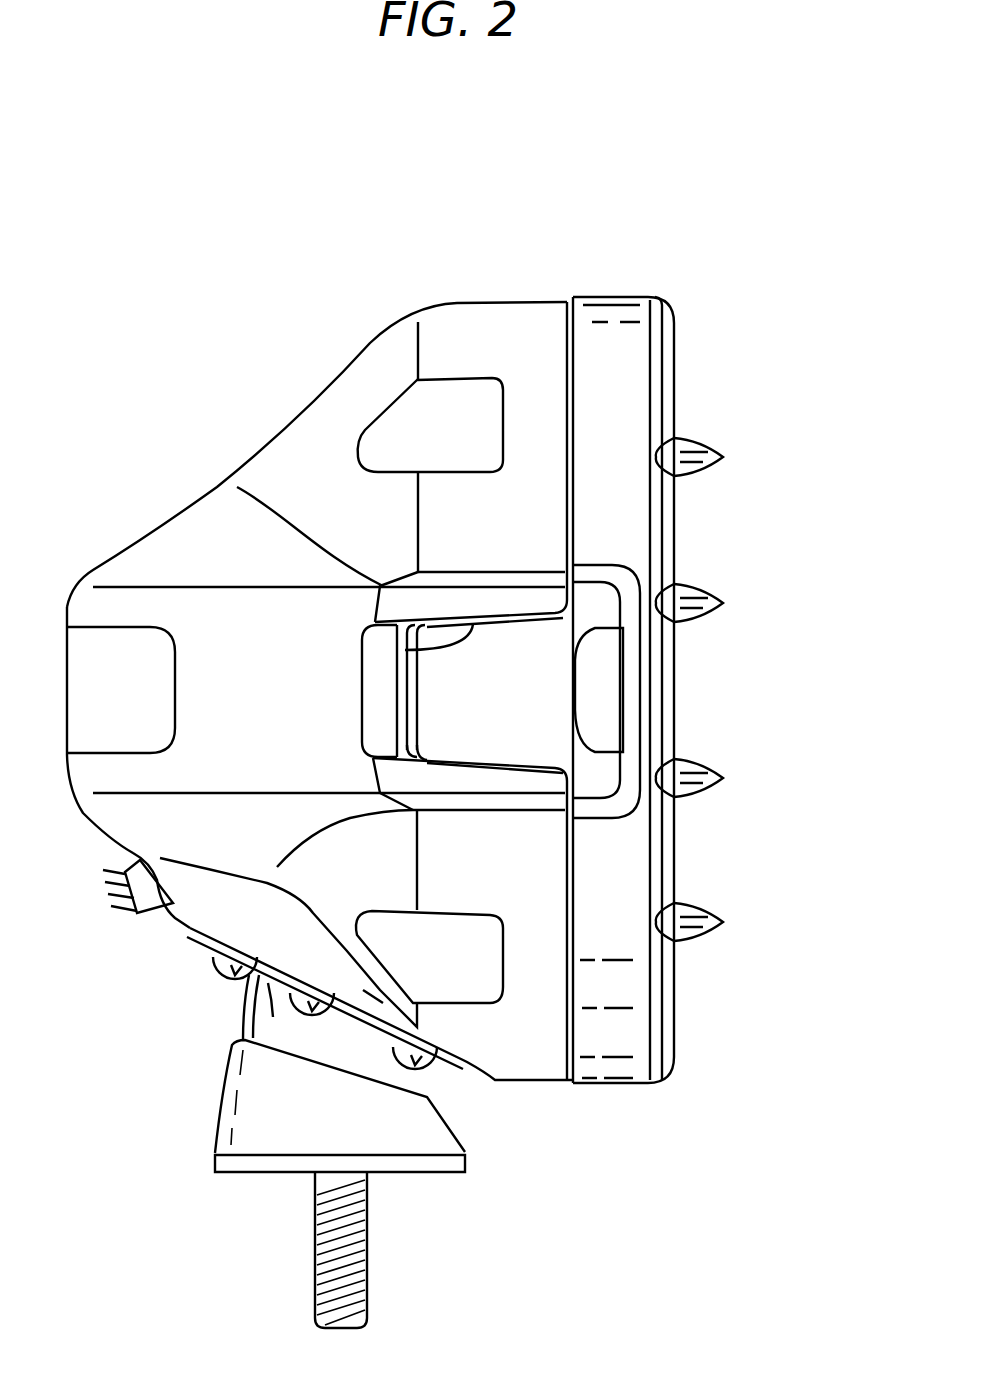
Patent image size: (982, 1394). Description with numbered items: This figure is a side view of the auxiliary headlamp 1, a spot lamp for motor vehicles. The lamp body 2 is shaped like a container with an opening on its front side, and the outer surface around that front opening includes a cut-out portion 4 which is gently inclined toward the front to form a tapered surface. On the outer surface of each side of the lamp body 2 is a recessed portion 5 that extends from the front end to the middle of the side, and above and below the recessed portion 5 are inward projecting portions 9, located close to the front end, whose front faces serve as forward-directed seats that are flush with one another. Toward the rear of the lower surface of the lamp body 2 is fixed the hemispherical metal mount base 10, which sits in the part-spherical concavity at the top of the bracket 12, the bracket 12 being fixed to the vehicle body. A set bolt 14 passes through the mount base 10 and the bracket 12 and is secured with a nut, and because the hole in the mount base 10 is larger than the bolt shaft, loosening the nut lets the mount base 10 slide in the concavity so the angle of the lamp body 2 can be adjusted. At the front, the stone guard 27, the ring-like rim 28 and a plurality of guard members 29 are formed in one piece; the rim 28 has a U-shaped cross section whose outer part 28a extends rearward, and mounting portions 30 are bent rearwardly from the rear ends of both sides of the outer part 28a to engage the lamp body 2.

The auxiliary headlamp 1 is at (311, 252).
The lamp body 2 is at (213, 487).
The cut-out portion 4 is at (570, 368).
The recessed portion 5 is at (397, 650).
The inward projecting portion 9 is at (503, 400).
The mount base 10 is at (247, 1012).
The bracket 12 is at (247, 1090).
The set bolt 14 is at (318, 1273).
The stone guard 27 is at (673, 1007).
The rim 28 is at (637, 400).
The outer part 28a is at (613, 1070).
The guard member 29 is at (723, 455).
The mounting portion 30 is at (447, 720).